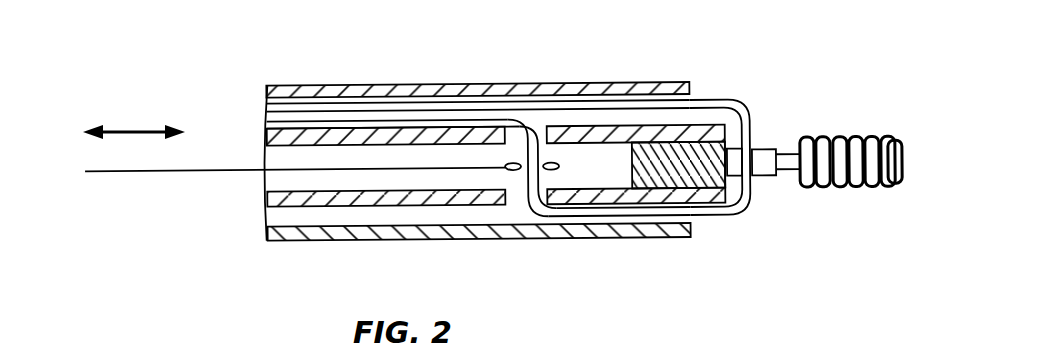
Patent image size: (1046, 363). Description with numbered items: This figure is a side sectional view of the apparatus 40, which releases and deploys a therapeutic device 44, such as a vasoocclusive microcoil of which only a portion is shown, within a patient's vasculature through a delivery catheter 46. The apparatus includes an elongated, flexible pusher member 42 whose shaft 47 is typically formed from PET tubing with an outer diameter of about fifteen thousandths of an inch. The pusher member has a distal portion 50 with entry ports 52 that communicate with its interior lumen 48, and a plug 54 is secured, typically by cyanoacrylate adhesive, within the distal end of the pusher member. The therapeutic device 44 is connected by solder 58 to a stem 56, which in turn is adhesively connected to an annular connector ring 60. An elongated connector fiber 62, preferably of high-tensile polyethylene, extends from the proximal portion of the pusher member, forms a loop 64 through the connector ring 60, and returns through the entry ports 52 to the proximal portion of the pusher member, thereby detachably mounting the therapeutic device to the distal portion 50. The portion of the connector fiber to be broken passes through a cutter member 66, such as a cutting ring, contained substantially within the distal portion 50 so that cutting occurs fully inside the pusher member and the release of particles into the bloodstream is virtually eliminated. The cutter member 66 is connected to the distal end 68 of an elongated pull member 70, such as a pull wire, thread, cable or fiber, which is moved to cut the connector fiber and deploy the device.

The apparatus 40 is at (803, 89).
The pusher member 42 is at (636, 126).
The therapeutic device 44 is at (844, 199).
The delivery catheter 46 is at (533, 238).
The shaft 47 is at (290, 212).
The interior lumen 48 is at (592, 148).
The distal portion 50 is at (573, 206).
The entry ports 52 is at (538, 127).
The plug 54 is at (718, 192).
The stem 56 is at (788, 178).
The solder 58 is at (818, 138).
The annular connector ring 60 is at (763, 148).
The connector fiber 62 is at (702, 99).
The loop 64 is at (758, 190).
The cutter member 66 is at (505, 171).
The distal end 68 is at (500, 152).
The pull member 70 is at (232, 170).